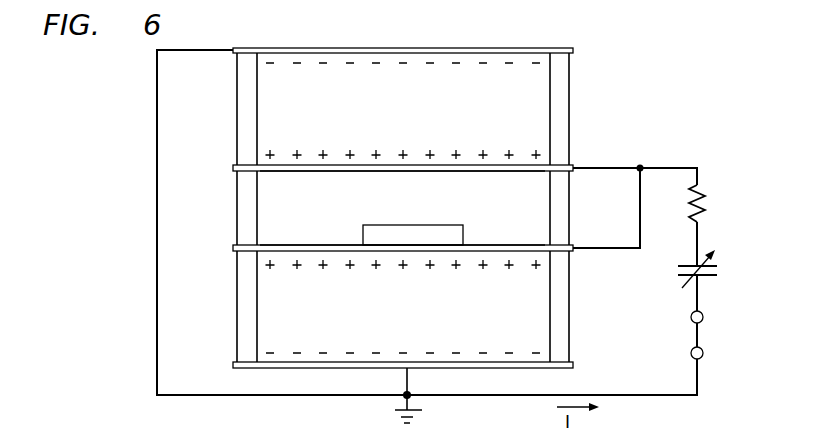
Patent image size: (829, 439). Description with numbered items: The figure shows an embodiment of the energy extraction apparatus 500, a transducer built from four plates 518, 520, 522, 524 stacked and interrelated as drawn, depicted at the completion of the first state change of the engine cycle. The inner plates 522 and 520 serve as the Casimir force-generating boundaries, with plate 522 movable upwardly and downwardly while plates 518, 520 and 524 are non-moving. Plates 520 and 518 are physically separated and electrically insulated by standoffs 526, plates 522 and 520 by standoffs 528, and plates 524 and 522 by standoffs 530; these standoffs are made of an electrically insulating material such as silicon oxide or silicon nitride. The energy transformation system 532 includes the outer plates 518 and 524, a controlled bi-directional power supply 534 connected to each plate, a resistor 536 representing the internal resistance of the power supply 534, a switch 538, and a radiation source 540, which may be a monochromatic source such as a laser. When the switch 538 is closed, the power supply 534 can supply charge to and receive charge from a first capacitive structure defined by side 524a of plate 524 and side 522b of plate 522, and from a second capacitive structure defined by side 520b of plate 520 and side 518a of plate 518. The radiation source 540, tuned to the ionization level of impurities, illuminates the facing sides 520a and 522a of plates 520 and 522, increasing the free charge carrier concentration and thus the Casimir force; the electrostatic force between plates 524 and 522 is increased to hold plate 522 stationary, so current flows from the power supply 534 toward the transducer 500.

The energy extraction apparatus 500 is at (638, 50).
The plate 518 is at (233, 362).
The side of plate 518 518a is at (283, 360).
The plate 520 is at (233, 247).
The side of plate 520 520a is at (278, 243).
The side of plate 520 520b is at (338, 260).
The plate 522 is at (233, 167).
The side of plate 522 522a is at (325, 175).
The side of plate 522 522b is at (290, 158).
The plate 524 is at (243, 48).
The side of plate 524 524a is at (331, 64).
The standoffs 526 is at (557, 296).
The standoffs 528 is at (557, 208).
The standoffs 530 is at (555, 102).
The energy transformation system 532 is at (712, 150).
The controlled bi-directional power supply 534 is at (715, 272).
The resistor 536 is at (708, 200).
The switch 538 is at (698, 337).
The radiation source 540 is at (388, 232).